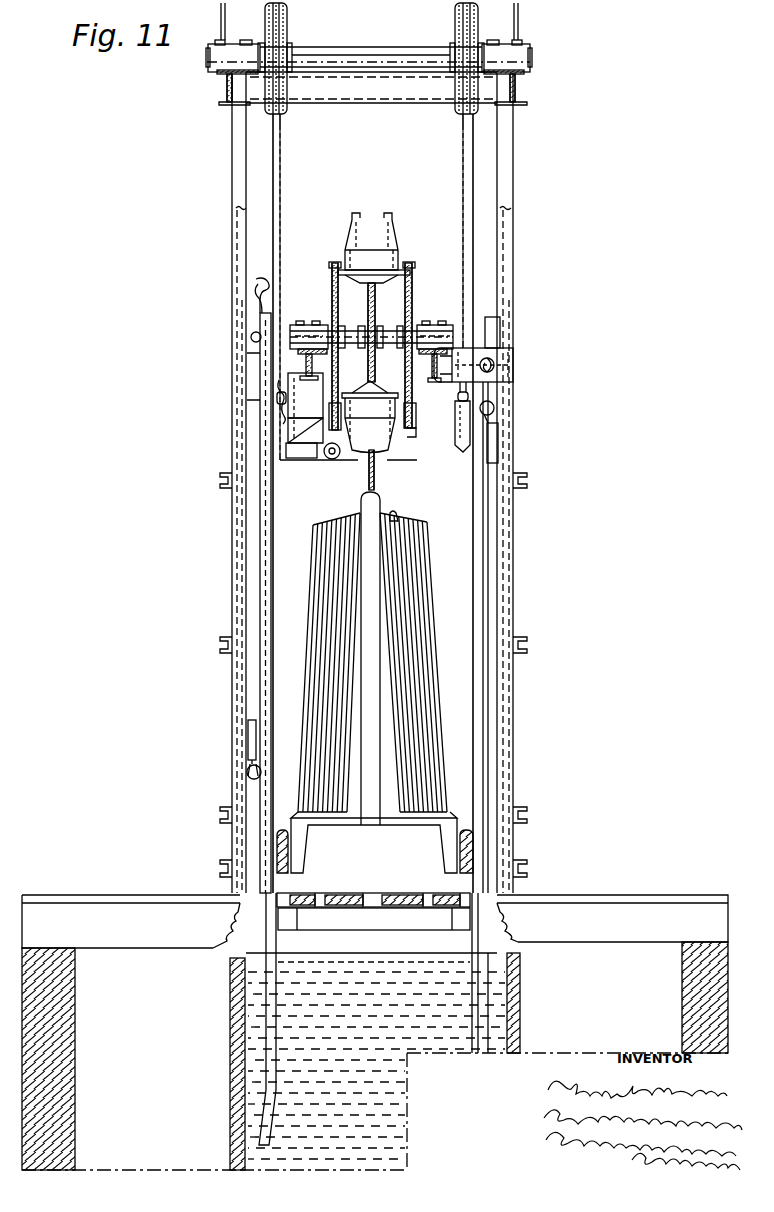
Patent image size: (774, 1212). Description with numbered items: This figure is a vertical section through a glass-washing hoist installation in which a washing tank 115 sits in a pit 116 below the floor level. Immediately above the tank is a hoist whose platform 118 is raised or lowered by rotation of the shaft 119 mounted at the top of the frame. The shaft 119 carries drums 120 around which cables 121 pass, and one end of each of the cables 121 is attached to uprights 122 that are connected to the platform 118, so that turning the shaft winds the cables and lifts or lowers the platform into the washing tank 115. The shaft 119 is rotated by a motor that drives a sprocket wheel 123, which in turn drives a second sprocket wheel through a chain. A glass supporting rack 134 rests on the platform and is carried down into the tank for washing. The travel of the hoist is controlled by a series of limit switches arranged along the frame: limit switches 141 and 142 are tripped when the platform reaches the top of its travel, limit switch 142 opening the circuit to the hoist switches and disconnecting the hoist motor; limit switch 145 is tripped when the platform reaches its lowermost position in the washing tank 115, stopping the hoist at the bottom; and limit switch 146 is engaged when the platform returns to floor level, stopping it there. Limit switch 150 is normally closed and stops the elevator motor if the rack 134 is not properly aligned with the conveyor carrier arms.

The washing tank 115 is at (234, 1040).
The pit 116 is at (187, 1100).
The platform 118 is at (405, 899).
The shaft 119 is at (372, 56).
The drums 120 is at (288, 34).
The cables 121 is at (280, 172).
The uprights 122 is at (276, 519).
The sprocket wheel 123 is at (374, 312).
The glass supporting rack 134 is at (387, 819).
The limit switch 141 is at (253, 376).
The limit switch 142 is at (494, 332).
The limit switch 145 is at (248, 746).
The limit switch 146 is at (493, 436).
The limit switch 150 is at (309, 452).